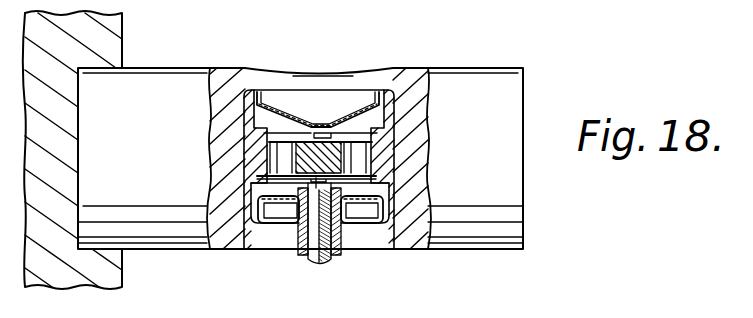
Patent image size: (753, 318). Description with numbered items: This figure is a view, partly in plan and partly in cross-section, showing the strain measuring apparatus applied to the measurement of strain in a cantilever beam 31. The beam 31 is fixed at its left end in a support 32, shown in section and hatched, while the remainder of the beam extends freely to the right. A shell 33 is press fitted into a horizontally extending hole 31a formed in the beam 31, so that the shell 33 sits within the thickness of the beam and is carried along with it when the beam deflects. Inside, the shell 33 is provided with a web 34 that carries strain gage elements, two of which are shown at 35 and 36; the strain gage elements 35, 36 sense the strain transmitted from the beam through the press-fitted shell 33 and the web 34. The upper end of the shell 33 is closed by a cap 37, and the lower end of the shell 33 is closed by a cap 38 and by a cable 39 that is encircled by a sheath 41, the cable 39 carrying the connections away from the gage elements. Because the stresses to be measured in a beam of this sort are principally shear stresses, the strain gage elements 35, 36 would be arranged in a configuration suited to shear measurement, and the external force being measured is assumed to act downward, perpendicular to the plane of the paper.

The cantilever beam 31 is at (512, 108).
The horizontally extending hole 31a is at (390, 80).
The support 32 is at (123, 31).
The shell 33 is at (368, 242).
The web 34 is at (339, 142).
The strain gage element 35 is at (309, 126).
The strain gage element 36 is at (299, 230).
The cap 37 is at (348, 142).
The cap 38 is at (359, 216).
The cable 39 is at (321, 264).
The sheath 41 is at (297, 245).